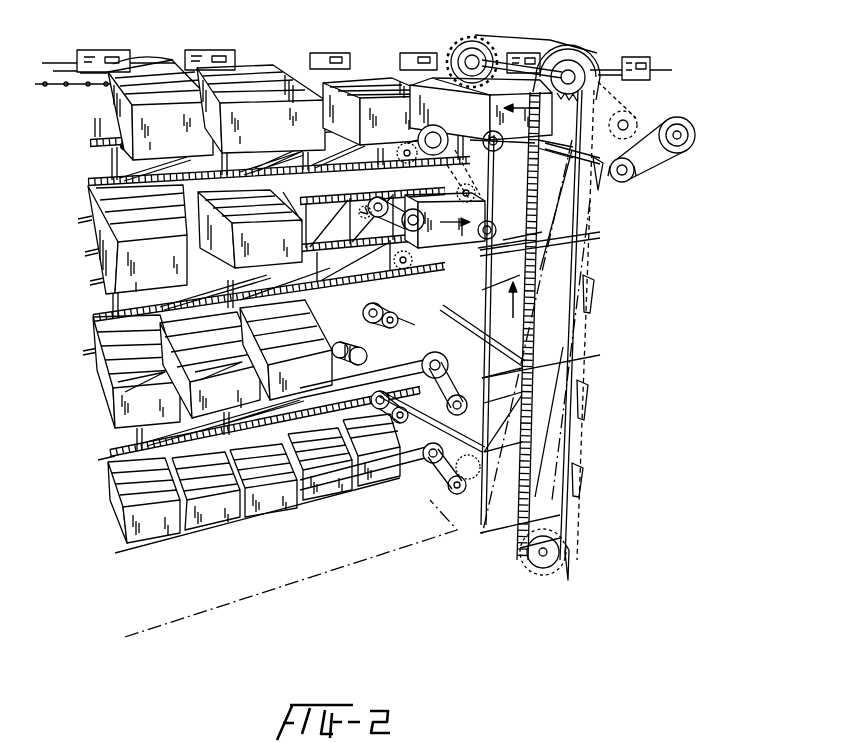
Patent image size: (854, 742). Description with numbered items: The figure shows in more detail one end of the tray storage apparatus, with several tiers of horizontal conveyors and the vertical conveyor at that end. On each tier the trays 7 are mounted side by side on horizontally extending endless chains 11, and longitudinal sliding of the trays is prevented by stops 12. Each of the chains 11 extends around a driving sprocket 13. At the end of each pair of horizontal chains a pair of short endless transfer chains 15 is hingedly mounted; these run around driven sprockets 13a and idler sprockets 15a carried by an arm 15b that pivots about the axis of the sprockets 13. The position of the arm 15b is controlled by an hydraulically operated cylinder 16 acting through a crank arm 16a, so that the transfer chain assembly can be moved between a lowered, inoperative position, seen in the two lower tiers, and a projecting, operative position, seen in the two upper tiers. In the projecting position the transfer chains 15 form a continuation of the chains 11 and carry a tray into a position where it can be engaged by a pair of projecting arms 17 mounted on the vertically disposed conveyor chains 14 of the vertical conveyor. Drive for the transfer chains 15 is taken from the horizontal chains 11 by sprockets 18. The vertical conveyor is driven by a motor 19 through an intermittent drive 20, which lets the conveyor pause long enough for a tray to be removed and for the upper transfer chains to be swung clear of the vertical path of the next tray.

The tray 7 is at (272, 118).
The horizontally extending endless chain 11 is at (90, 147).
The stop 12 is at (122, 150).
The driving sprocket 13 is at (436, 153).
The driven sprocket 13a is at (368, 212).
The vertically disposed conveyor chain 14 is at (582, 355).
The transfer chain 15 is at (463, 385).
The idler sprocket 15a is at (506, 230).
The arm 15b is at (487, 145).
The hydraulically operated cylinder 16 is at (331, 372).
The crank arm 16a is at (432, 300).
The projecting arm 17 is at (515, 268).
The sprocket 18 is at (425, 480).
The motor 19 is at (622, 175).
The intermittent drive 20 is at (640, 120).